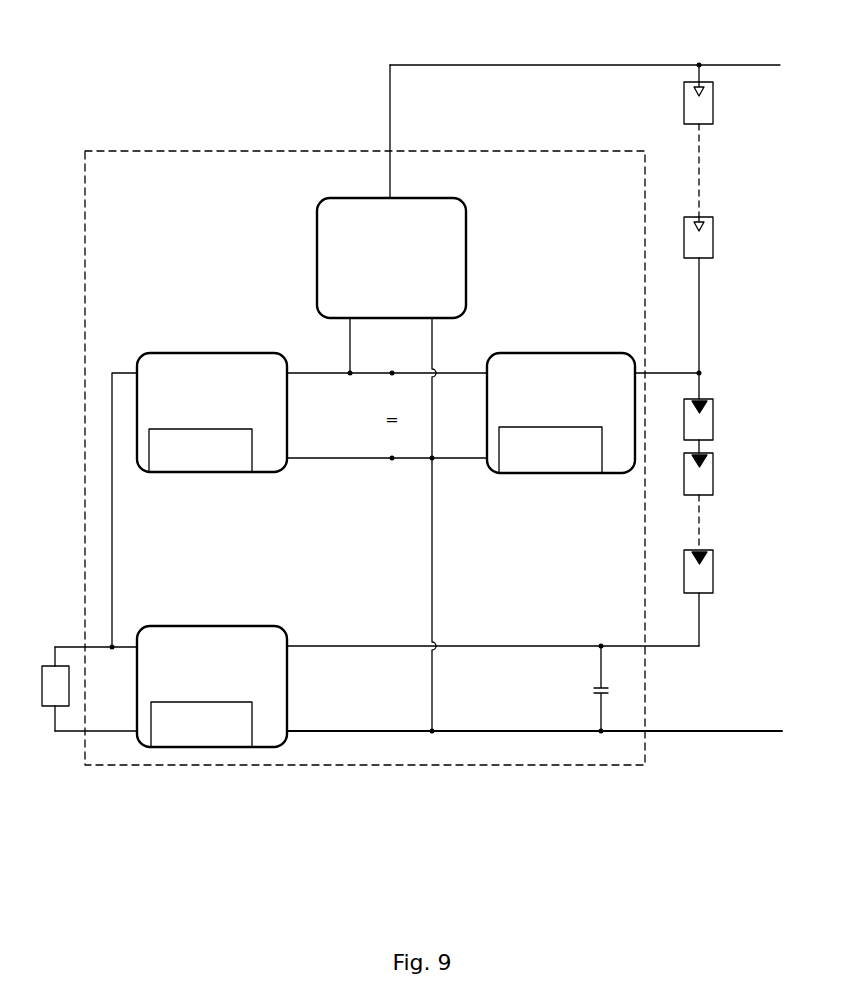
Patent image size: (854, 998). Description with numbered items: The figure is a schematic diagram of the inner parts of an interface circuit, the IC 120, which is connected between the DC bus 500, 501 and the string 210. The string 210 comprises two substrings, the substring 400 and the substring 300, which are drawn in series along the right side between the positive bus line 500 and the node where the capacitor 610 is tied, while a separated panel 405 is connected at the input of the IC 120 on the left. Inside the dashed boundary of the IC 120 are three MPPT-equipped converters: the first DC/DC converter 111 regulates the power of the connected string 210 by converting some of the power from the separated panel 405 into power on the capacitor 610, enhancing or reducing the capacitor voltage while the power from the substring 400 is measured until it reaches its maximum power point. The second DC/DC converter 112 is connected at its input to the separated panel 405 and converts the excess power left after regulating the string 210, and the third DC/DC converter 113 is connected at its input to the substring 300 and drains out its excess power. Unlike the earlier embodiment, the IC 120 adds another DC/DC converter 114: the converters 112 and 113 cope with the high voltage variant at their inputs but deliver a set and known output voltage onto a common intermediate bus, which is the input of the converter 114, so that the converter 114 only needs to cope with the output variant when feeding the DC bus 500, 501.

The first DC/DC converter 111 is at (203, 640).
The second DC/DC converter 112 is at (208, 353).
The third DC/DC converter 113 is at (517, 353).
The DC/DC converter 114 is at (317, 230).
The IC 120 is at (142, 148).
The string 210 is at (780, 79).
The substring 300 is at (725, 389).
The substring 400 is at (725, 78).
The separated panel 405 is at (52, 672).
The DC bus 500 is at (425, 66).
The DC bus 501 is at (663, 731).
The capacitor 610 is at (593, 682).